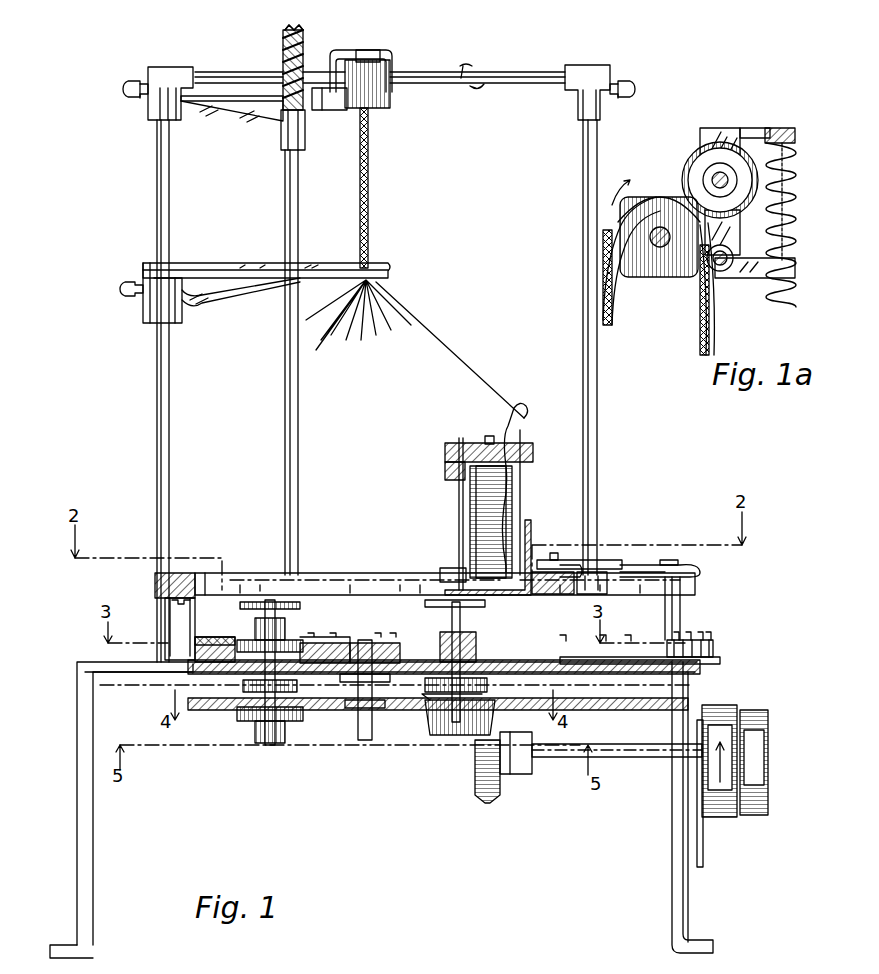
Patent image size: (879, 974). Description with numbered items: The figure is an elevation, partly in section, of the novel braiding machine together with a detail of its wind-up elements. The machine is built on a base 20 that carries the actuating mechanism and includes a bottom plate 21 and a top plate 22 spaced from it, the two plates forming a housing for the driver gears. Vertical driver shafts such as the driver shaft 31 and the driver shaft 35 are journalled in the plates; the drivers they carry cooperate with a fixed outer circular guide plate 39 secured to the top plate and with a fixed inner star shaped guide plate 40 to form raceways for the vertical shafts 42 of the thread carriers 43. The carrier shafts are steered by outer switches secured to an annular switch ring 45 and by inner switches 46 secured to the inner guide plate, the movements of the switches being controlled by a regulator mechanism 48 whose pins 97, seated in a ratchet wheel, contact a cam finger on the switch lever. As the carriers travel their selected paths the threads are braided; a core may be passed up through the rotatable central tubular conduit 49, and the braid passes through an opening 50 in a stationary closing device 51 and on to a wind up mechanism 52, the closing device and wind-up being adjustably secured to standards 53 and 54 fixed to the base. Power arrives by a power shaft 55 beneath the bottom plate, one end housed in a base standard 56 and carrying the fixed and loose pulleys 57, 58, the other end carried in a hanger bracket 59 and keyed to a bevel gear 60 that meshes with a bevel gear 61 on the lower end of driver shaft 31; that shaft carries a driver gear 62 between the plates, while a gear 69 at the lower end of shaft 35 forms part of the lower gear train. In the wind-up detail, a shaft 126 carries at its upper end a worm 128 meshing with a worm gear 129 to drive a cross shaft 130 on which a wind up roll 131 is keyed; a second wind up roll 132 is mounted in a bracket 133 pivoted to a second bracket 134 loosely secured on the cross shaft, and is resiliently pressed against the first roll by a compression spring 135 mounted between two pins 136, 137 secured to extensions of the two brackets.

In FIG. 1, the base 20 is at (65, 726).
In FIG. 1, the bottom plate 21 is at (208, 705).
In FIG. 1, the top plate 22 is at (98, 665).
In FIG. 1, the driver shaft 31 is at (452, 622).
In FIG. 1, the driver shaft 35 is at (275, 622).
In FIG. 1, the outer circular guide plate 39 is at (165, 648).
In FIG. 1, the inner star shaped guide plate 40 is at (379, 638).
In FIG. 1, the carrier shaft 42 is at (515, 602).
In FIG. 1, the thread carrier 43 is at (437, 501).
In FIG. 1, the annular switch ring 45 is at (222, 638).
In FIG. 1, the inner switch 46 is at (330, 638).
In FIG. 1, the regulator mechanism 48 is at (719, 650).
In FIG. 1, the central tubular conduit 49 is at (366, 720).
In FIG. 1, the opening 50 is at (373, 273).
In FIG. 1, the closing device 51 is at (388, 274).
In FIG. 1, the wind up mechanism 52 is at (416, 119).
In FIG. 1, the standard 53 is at (157, 185).
In FIG. 1, the standard 54 is at (583, 181).
In FIG. 1, the power shaft 55 is at (650, 754).
In FIG. 1, the base standard 56 is at (675, 830).
In FIG. 1, the fixed pulley 57 is at (718, 708).
In FIG. 1, the loose pulley 58 is at (763, 710).
In FIG. 1, the hanger bracket 59 is at (523, 772).
In FIG. 1, the bevel gear 60 is at (483, 782).
In FIG. 1, the bevel gear 61 is at (455, 737).
In FIG. 1, the driver gear 62 is at (490, 684).
In FIG. 1, the gear 69 is at (302, 720).
In FIG. 1, the pins 97 is at (702, 632).
In FIG. 1, the shaft 126 is at (298, 450).
In FIG. 1, the worm 128 is at (283, 66).
In FIG. 1, the worm gear 129 is at (303, 38).
In FIG. 1, the cross shaft 130 is at (219, 72).
In FIG. 1A, the cross shaft 130 is at (725, 170).
In FIG. 1, the wind up roll 131 is at (391, 64).
In FIG. 1A, the wind up roll 131 is at (676, 160).
In FIG. 1A, the second wind up roll 132 is at (658, 276).
In FIG. 1, the bracket 133 is at (333, 110).
In FIG. 1, the second bracket 134 is at (373, 51).
In FIG. 1A, the second bracket 134 is at (706, 130).
In FIG. 1A, the compression spring 135 is at (797, 248).
In FIG. 1A, the pin 136 is at (765, 274).
In FIG. 1A, the pin 137 is at (780, 128).